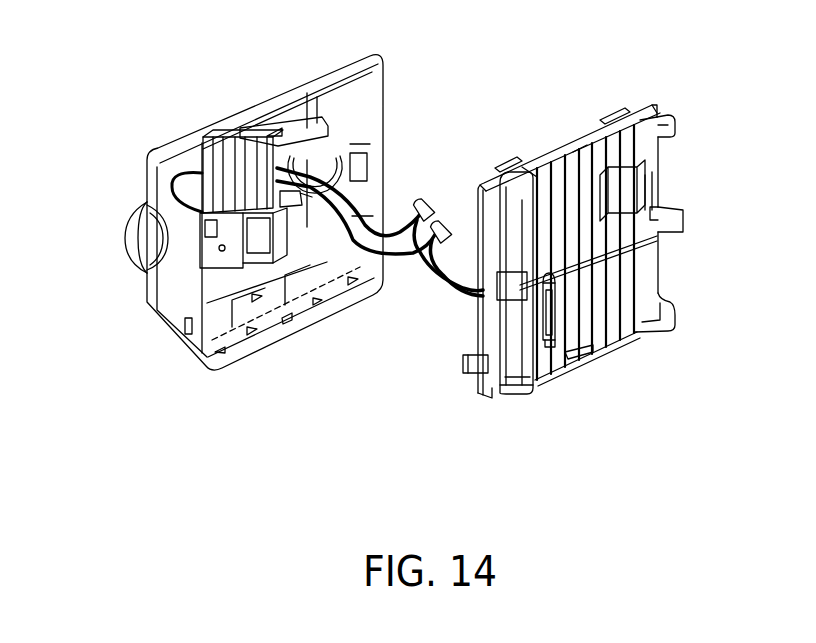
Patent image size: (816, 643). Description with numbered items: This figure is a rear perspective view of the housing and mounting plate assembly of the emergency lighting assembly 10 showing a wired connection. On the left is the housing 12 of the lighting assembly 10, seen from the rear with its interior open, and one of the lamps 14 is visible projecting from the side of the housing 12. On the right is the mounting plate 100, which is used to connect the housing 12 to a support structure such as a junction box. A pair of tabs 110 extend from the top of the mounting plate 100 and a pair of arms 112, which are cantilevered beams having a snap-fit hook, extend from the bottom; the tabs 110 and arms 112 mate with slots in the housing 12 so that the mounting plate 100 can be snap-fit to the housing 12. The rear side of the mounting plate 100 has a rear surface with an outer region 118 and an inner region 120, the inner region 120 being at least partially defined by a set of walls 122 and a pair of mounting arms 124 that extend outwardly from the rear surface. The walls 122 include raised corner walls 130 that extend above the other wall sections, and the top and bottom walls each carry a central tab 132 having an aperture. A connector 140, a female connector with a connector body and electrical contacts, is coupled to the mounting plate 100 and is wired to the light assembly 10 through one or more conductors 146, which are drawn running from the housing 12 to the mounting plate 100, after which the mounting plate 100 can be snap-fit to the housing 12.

The emergency lighting assembly 10 is at (112, 141).
The housing 12 is at (167, 307).
The lamp 14 is at (121, 242).
The mounting plate 100 is at (658, 94).
The tab 110 is at (618, 108).
The arm 112 is at (463, 363).
The outer region 118 is at (499, 396).
The inner region 120 is at (624, 289).
The walls 122 is at (624, 344).
The mounting arm 124 is at (686, 223).
The raised corner wall 130 is at (678, 122).
The central tab 132 is at (594, 355).
The connector 140 is at (552, 350).
The conductor 146 is at (437, 270).